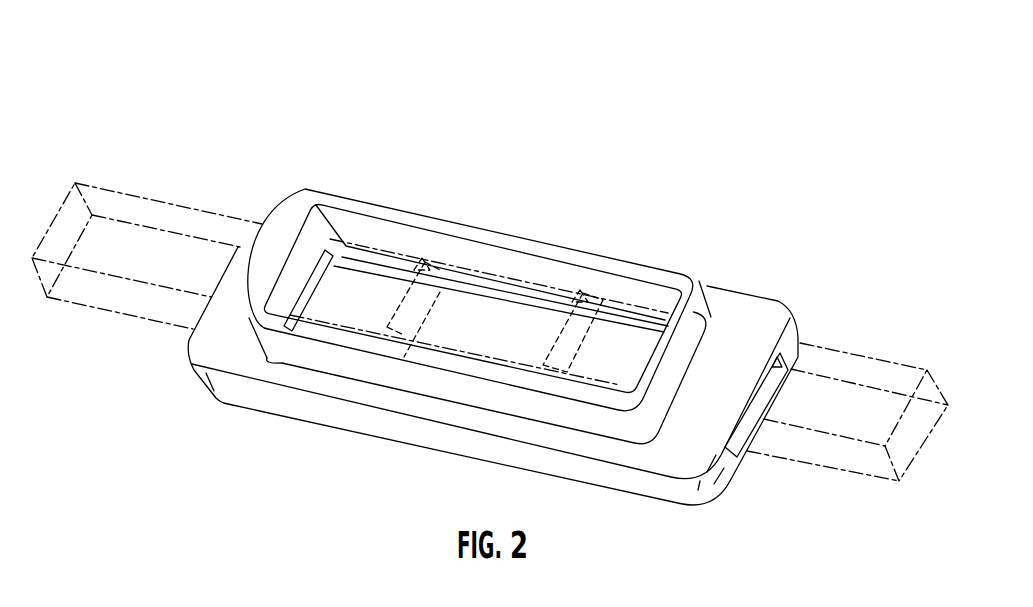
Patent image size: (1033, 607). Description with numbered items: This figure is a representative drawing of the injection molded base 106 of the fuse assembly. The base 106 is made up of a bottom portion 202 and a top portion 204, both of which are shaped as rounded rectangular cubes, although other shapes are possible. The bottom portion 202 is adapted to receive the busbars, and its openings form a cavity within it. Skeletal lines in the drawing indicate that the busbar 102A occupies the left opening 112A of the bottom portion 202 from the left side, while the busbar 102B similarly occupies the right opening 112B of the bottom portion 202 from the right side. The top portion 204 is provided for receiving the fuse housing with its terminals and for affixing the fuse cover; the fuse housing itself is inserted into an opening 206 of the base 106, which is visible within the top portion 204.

The injection molded base 106 is at (127, 72).
The busbar 102A is at (152, 263).
The busbar 102B is at (852, 413).
The left opening 112A is at (293, 290).
The right opening 112B is at (750, 437).
The bottom portion 202 is at (673, 447).
The top portion 204 is at (557, 250).
The opening 206 is at (510, 333).